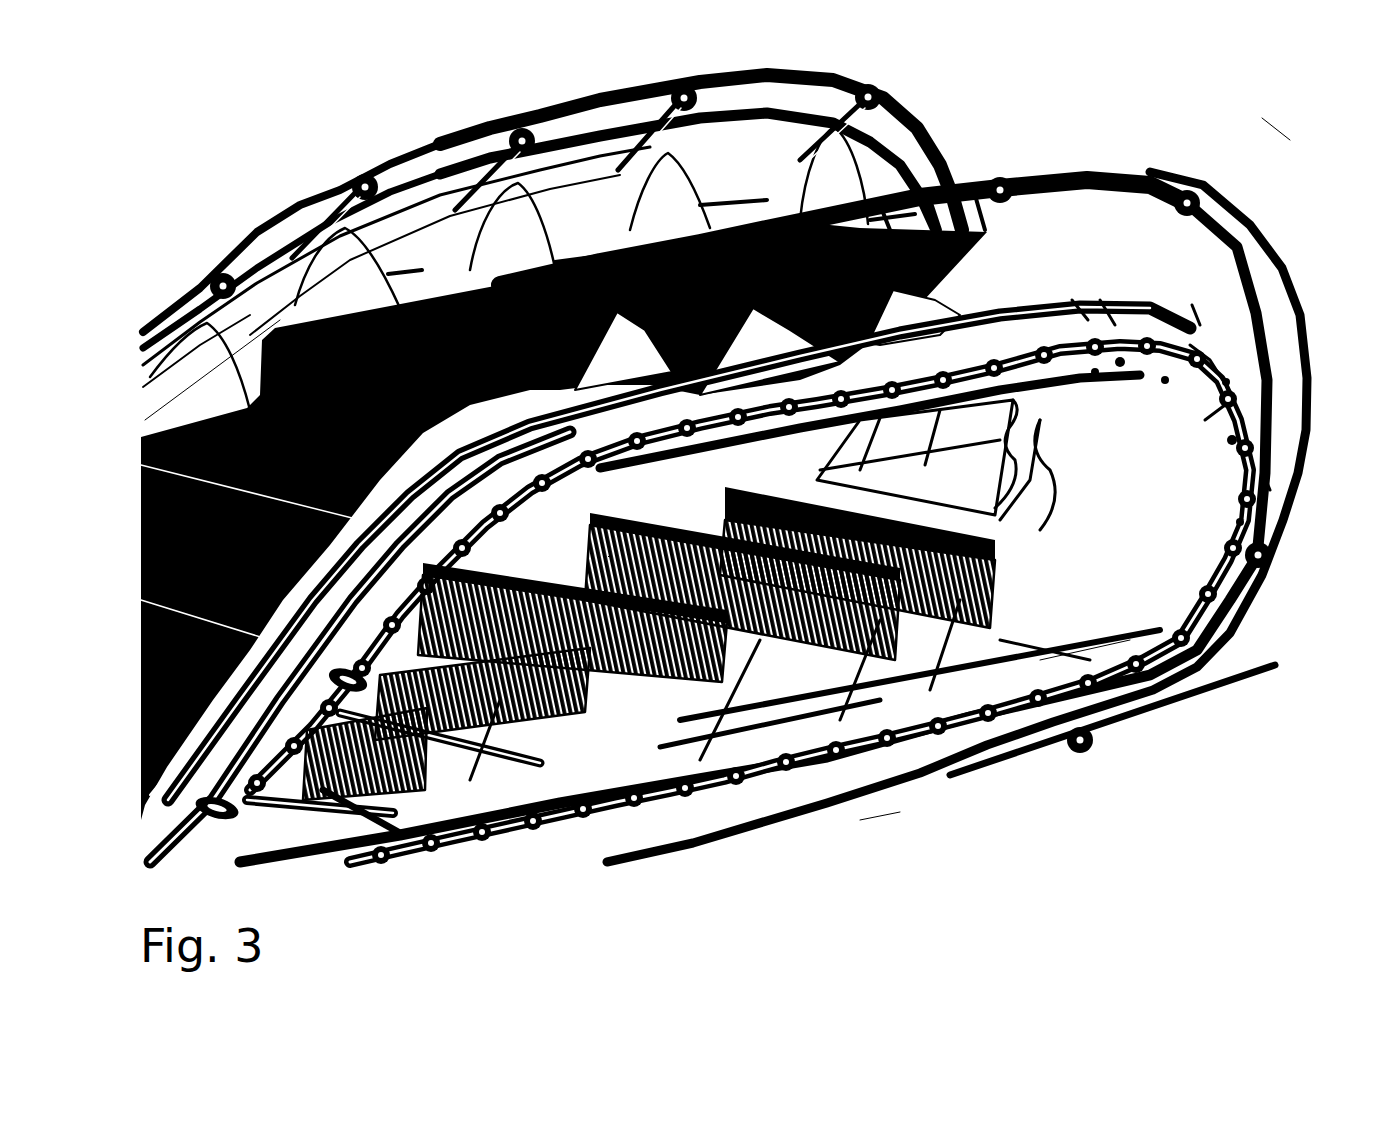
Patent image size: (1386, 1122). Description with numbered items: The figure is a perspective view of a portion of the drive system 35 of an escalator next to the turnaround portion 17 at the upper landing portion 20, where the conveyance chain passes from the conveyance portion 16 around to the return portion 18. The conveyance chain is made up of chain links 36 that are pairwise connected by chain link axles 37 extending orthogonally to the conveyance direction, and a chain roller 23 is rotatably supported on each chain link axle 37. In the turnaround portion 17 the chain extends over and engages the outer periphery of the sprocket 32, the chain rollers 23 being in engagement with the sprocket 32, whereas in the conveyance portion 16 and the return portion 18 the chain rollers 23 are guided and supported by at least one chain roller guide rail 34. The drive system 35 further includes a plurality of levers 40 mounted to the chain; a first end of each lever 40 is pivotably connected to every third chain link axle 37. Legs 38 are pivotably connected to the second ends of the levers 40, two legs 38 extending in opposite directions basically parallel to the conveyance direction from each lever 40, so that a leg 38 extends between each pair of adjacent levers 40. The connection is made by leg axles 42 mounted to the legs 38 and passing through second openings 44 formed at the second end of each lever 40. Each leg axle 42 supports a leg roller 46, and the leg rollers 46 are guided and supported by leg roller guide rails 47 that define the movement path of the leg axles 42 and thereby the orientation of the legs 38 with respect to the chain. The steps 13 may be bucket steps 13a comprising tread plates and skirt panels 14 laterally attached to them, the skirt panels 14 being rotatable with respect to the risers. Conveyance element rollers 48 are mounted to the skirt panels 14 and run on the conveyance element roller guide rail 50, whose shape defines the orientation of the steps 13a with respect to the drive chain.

The steps 13 is at (420, 224).
The bucket steps 13a is at (600, 190).
The skirt panels 14 is at (522, 217).
The conveyance portion 16 is at (200, 212).
The turnaround portion 17 is at (1302, 280).
The return portion 18 is at (881, 831).
The upper landing portion 20 is at (1276, 118).
The chain roller 23 is at (739, 448).
The sprocket 32 is at (1130, 530).
The chain roller guide rail 34 is at (1166, 302).
The drive system 35 is at (1090, 652).
The chain links 36 is at (1166, 380).
The chain link axles 37 is at (1193, 346).
The legs 38 is at (1008, 294).
The levers 40 is at (1120, 364).
The leg axles 42 is at (1095, 374).
The second openings 44 is at (1110, 302).
The leg roller 46 is at (1074, 302).
The leg roller guide rails 47 is at (1194, 306).
The conveyance element rollers 48 is at (519, 136).
The conveyance element roller guide rail 50 is at (286, 188).